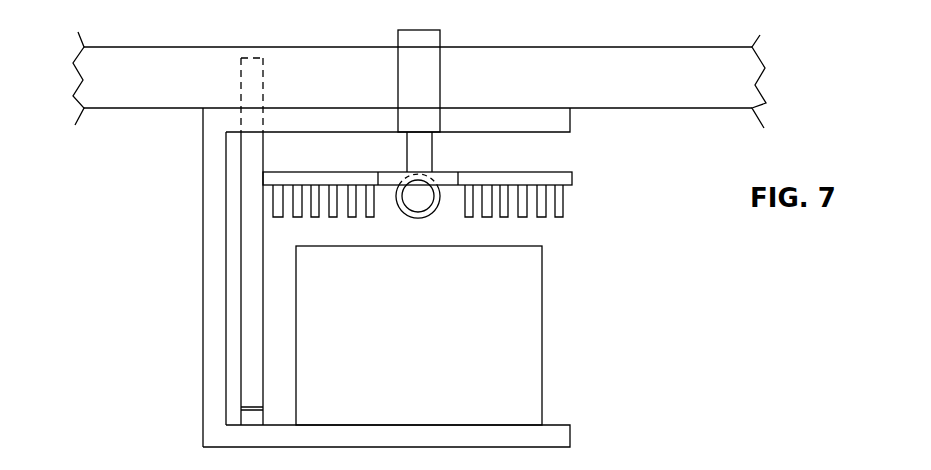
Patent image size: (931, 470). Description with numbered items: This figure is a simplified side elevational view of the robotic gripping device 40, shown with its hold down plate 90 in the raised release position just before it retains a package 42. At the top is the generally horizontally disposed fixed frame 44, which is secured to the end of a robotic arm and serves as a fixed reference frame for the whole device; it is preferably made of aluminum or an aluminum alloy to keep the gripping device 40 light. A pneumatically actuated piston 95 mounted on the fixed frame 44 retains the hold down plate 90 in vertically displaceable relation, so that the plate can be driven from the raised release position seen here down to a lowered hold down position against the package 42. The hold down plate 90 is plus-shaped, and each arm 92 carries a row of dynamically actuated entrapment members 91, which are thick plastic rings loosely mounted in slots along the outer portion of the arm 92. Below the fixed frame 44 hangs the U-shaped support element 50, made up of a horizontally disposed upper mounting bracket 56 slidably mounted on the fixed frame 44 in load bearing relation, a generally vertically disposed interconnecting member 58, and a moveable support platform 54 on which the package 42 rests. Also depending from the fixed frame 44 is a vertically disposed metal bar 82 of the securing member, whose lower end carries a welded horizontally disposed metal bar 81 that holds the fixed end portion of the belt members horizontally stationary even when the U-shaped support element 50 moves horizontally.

The robotic gripping device 40 is at (712, 271).
The package 42 is at (543, 348).
The fixed frame 44 is at (138, 47).
The U-shaped support element 50 is at (131, 312).
The support platform 54 is at (570, 448).
The upper mounting bracket 56 is at (572, 121).
The interconnecting member 58 is at (203, 273).
The horizontally disposed metal bar 81 is at (252, 407).
The vertically disposed metal bar 82 is at (264, 320).
The hold down plate 90 is at (572, 172).
The dynamically actuated entrapment member 91 is at (563, 200).
The arm 92 is at (310, 172).
The pneumatically actuated piston 95 is at (440, 77).